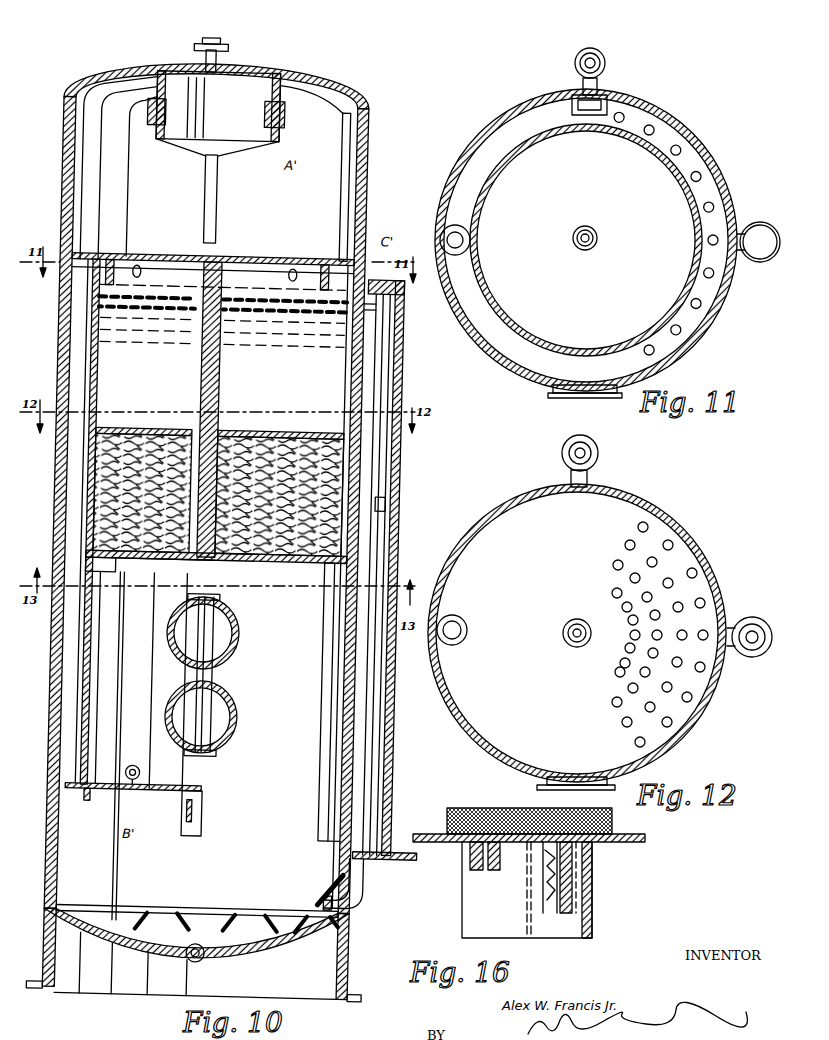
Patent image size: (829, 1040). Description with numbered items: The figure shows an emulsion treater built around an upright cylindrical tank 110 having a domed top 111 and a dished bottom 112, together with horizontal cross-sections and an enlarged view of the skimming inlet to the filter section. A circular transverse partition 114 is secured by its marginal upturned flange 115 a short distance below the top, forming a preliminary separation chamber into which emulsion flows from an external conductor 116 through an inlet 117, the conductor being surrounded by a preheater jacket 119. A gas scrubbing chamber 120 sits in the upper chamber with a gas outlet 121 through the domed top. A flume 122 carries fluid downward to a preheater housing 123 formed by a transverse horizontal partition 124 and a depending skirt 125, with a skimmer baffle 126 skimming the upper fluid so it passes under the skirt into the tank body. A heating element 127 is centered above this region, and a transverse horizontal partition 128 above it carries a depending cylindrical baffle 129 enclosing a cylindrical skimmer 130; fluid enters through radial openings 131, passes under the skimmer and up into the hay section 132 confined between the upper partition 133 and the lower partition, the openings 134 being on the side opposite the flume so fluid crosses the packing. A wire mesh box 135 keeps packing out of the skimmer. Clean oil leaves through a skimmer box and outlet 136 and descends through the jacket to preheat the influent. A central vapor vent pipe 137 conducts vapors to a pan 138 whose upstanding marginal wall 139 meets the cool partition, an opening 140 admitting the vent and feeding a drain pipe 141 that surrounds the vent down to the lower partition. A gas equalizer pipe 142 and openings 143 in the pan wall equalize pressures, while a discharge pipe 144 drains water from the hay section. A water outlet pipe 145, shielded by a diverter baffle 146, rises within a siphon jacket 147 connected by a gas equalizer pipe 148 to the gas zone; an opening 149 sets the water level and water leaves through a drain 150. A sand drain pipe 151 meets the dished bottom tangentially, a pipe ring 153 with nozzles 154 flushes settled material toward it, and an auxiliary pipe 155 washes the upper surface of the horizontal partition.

In FIG. 11, the upright cylindrical tank 110 is at (518, 367).
In FIG. 12, the upright cylindrical tank 110 is at (494, 745).
In FIG. 10, the domed top 111 is at (346, 94).
In FIG. 10, the dished bottom 112 is at (366, 924).
In FIG. 10, the circular transverse partition 114 is at (262, 256).
In FIG. 10, the marginal upturned flange 115 is at (222, 270).
In FIG. 12, the conductor 116 is at (563, 466).
In FIG. 11, the inlet 117 is at (580, 92).
In FIG. 11, the preheater jacket 119 is at (606, 66).
In FIG. 12, the preheater jacket 119 is at (598, 460).
In FIG. 10, the gas scrubbing chamber 120 is at (252, 92).
In FIG. 10, the gas outlet 121 is at (205, 48).
In FIG. 10, the flume 122 is at (90, 368).
In FIG. 11, the flume 122 is at (452, 228).
In FIG. 12, the flume 122 is at (453, 645).
In FIG. 10, the preheater housing 123 is at (170, 791).
In FIG. 10, the transverse horizontal partition 124 is at (122, 784).
In FIG. 10, the depending skirt 125 is at (220, 810).
In FIG. 10, the skimmer baffle 126 is at (210, 830).
In FIG. 10, the heating element 127 is at (236, 705).
In FIG. 11, the heating element 127 is at (572, 398).
In FIG. 12, the heating element 127 is at (547, 781).
In FIG. 10, the transverse horizontal partition 128 is at (283, 562).
In FIG. 16, the transverse horizontal partition 128 is at (644, 840).
In FIG. 10, the cylindrical baffle 129 is at (130, 576).
In FIG. 16, the cylindrical baffle 129 is at (592, 922).
In FIG. 16, the cylindrical skimmer 130 is at (574, 896).
In FIG. 16, the radial openings 131 is at (497, 870).
In FIG. 10, the hay section 132 is at (372, 470).
In FIG. 10, the upper partition 133 is at (272, 408).
In FIG. 11, the upper partition 133 is at (712, 186).
In FIG. 12, the upper partition 133 is at (695, 684).
In FIG. 10, the openings 134 is at (312, 408).
In FIG. 11, the openings 134 is at (655, 128).
In FIG. 12, the openings 134 is at (672, 722).
In FIG. 16, the wire mesh box 135 is at (460, 812).
In FIG. 10, the skimmer box and outlet 136 is at (228, 368).
In FIG. 11, the skimmer box and outlet 136 is at (628, 102).
In FIG. 10, the vapor vent pipe 137 is at (276, 330).
In FIG. 11, the vapor vent pipe 137 is at (589, 248).
In FIG. 12, the vapor vent pipe 137 is at (590, 642).
In FIG. 10, the pan 138 is at (148, 314).
In FIG. 10, the upstanding marginal wall 139 is at (141, 266).
In FIG. 11, the upstanding marginal wall 139 is at (676, 297).
In FIG. 10, the opening 140 is at (220, 402).
In FIG. 11, the opening 140 is at (606, 210).
In FIG. 10, the drain pipe 141 is at (198, 392).
In FIG. 12, the drain pipe 141 is at (576, 618).
In FIG. 10, the gas equalizer pipe 142 is at (351, 160).
In FIG. 10, the openings 143 is at (298, 262).
In FIG. 11, the openings 143 is at (584, 344).
In FIG. 10, the discharge pipe 144 is at (336, 810).
In FIG. 10, the water outlet pipe 145 is at (384, 897).
In FIG. 10, the diverter baffle 146 is at (352, 878).
In FIG. 10, the siphon jacket 147 is at (394, 756).
In FIG. 11, the siphon jacket 147 is at (782, 204).
In FIG. 10, the gas equalizer pipe 148 is at (404, 338).
In FIG. 10, the opening 149 is at (400, 498).
In FIG. 10, the drain 150 is at (425, 856).
In FIG. 10, the sand drain pipe 151 is at (224, 962).
In FIG. 10, the pipe ring 153 is at (312, 908).
In FIG. 10, the nozzles 154 is at (196, 912).
In FIG. 10, the auxiliary pipe 155 is at (156, 773).